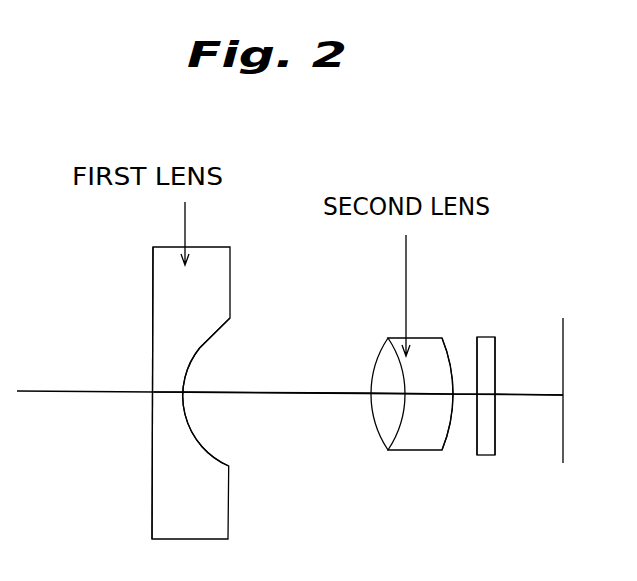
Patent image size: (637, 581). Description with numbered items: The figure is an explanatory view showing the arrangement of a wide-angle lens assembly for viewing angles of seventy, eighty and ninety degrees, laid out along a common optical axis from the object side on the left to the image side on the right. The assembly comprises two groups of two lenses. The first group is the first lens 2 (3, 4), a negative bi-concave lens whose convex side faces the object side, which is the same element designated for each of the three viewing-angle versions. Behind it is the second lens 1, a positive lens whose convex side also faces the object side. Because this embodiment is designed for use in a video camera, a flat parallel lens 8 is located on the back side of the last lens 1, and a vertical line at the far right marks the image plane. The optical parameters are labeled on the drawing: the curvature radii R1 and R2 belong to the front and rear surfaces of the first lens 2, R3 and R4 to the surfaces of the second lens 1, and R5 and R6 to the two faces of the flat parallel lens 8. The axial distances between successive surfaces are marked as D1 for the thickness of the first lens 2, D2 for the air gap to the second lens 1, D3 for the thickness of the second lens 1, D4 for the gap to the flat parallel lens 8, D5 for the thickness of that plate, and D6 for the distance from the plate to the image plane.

The second lens 1 is at (393, 436).
The first lens 2 is at (226, 393).
The first lens 3 is at (191, 393).
The first lens 4 is at (220, 531).
The flat parallel lens 8 is at (483, 457).
The curvature radius R1 is at (152, 316).
The curvature radius R2 is at (201, 346).
The curvature radius R3 is at (378, 354).
The curvature radius R4 is at (448, 352).
The curvature radius R5 is at (473, 350).
The curvature radius R6 is at (498, 355).
The surface distance D1 is at (170, 392).
The surface distance D2 is at (292, 396).
The surface distance D3 is at (412, 397).
The surface distance D4 is at (463, 397).
The surface distance D5 is at (485, 398).
The surface distance D6 is at (532, 397).